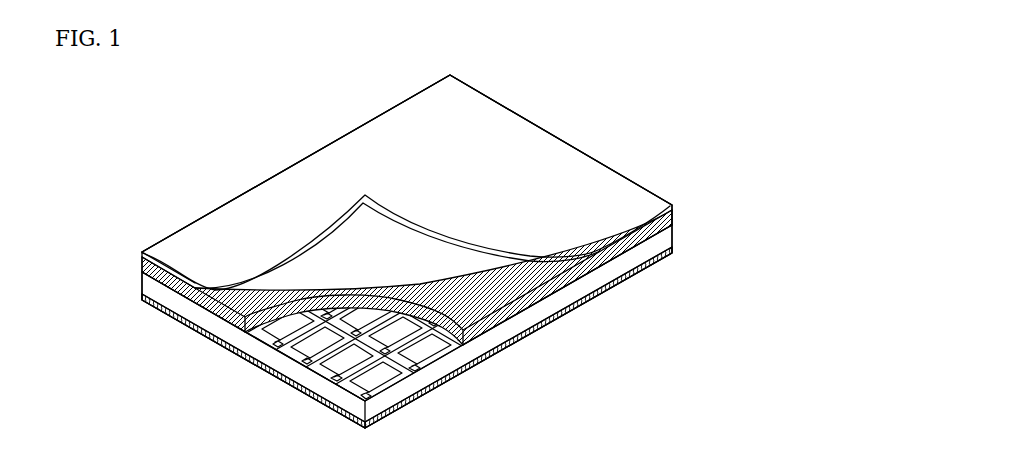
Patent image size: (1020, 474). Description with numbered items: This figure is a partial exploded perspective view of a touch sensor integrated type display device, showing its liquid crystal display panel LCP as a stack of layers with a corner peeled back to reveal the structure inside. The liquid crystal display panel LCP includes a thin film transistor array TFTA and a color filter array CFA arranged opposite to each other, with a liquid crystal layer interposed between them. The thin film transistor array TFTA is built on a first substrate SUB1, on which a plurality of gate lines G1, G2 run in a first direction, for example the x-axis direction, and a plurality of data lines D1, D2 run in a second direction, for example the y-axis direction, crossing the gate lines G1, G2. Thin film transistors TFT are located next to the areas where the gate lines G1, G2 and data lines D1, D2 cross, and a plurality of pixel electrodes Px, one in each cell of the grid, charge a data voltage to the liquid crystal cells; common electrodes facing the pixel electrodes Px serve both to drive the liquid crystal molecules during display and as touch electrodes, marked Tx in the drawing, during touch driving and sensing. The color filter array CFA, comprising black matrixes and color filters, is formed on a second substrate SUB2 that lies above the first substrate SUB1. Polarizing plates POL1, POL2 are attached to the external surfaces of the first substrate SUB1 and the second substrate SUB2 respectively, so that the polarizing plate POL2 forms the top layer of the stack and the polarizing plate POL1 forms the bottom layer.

The liquid crystal display panel LCP is at (815, 212).
The color filter array CFA is at (758, 197).
The thin film transistor array TFTA is at (758, 240).
The polarizing plate POL2 is at (673, 205).
The second substrate SUB2 is at (673, 220).
The first substrate SUB1 is at (670, 238).
The polarizing plate POL1 is at (672, 250).
The gate line G1 is at (390, 377).
The gate line G2 is at (442, 352).
The data line D1 is at (335, 383).
The data line D2 is at (310, 352).
The pixel electrode Px is at (357, 392).
The thin film transistor TFT is at (277, 355).
The touch electrode Tx is at (247, 342).